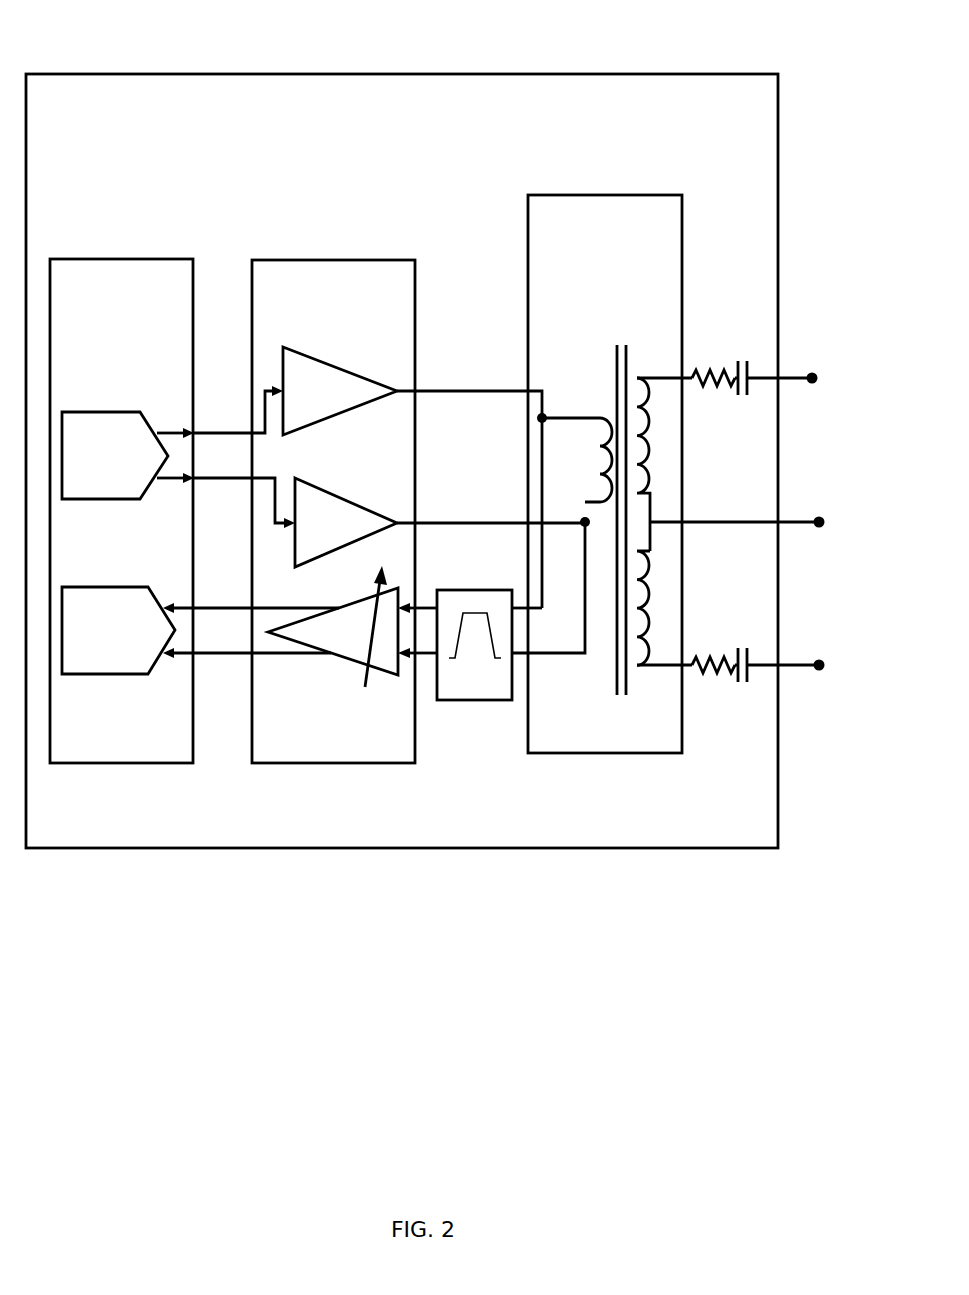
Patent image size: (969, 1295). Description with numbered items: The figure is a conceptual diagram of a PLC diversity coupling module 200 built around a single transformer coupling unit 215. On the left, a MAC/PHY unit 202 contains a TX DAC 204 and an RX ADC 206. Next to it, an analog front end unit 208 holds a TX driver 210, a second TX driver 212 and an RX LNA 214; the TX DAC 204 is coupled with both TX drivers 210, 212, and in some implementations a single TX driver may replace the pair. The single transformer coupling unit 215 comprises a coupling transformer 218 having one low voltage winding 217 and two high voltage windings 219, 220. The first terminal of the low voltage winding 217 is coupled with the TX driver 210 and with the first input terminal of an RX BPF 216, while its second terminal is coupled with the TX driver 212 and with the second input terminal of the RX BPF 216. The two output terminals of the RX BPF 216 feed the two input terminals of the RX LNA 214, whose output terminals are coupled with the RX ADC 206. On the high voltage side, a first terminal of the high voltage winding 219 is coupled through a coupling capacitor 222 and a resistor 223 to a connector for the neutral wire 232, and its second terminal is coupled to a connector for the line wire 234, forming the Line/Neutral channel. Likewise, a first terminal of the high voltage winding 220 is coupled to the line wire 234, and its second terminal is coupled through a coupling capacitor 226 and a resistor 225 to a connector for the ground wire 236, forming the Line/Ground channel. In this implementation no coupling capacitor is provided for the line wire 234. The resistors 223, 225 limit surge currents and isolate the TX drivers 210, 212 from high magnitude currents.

The PLC diversity coupling module 200 is at (207, 72).
The MAC/PHY unit 202 is at (88, 258).
The TX DAC 204 is at (100, 502).
The RX ADC 206 is at (100, 677).
The analog front end unit 208 is at (295, 259).
The TX driver 210 is at (369, 377).
The TX driver 212 is at (369, 505).
The RX LNA 214 is at (350, 665).
The single transformer coupling unit 215 is at (604, 194).
The RX BPF 216 is at (480, 703).
The low voltage winding 217 is at (600, 476).
The coupling transformer 218 is at (614, 361).
The high voltage winding 219 is at (643, 372).
The high voltage winding 220 is at (640, 690).
The coupling capacitor 222 is at (742, 396).
The resistor 223 is at (713, 363).
The resistor 225 is at (710, 672).
The coupling capacitor 226 is at (745, 684).
The neutral wire 232 is at (814, 384).
The line wire 234 is at (821, 528).
The ground wire 236 is at (821, 671).